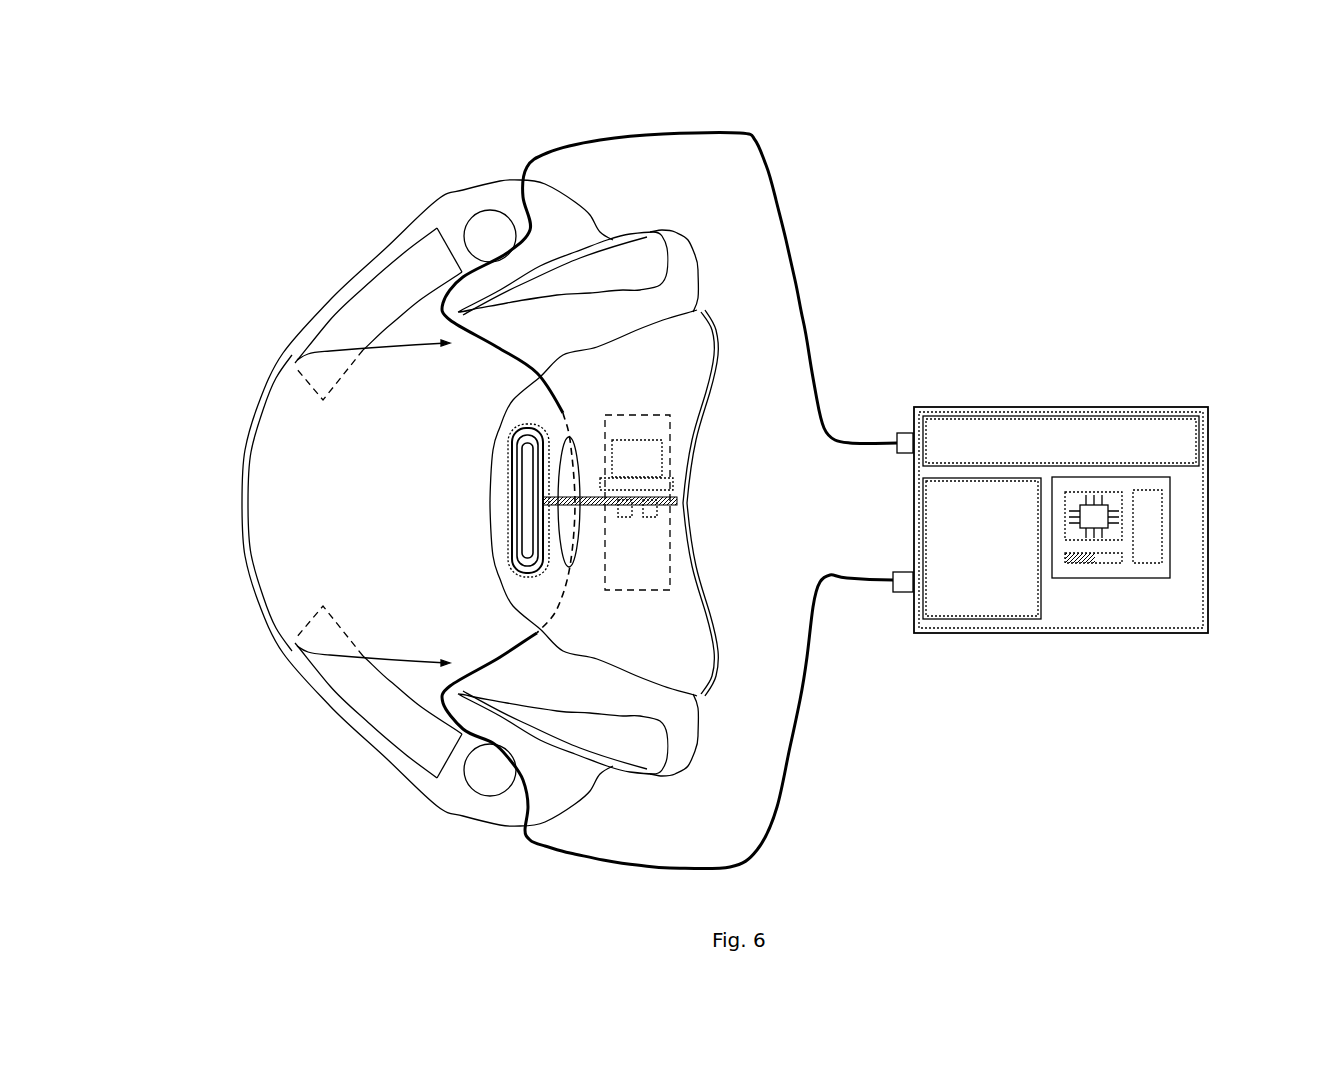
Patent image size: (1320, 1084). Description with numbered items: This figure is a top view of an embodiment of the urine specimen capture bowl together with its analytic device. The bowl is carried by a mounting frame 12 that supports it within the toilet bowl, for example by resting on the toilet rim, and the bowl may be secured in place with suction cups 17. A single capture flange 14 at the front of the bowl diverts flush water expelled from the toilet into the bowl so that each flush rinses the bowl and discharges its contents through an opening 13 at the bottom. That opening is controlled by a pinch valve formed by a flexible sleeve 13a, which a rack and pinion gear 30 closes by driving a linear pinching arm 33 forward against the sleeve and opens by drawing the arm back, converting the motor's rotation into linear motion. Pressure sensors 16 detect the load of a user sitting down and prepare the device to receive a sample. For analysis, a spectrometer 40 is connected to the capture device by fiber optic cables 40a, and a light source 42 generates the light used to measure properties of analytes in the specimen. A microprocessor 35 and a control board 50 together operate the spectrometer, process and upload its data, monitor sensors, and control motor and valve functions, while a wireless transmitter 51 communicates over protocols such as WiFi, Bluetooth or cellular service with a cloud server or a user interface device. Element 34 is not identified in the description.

The mounting frame 12 is at (448, 217).
The opening 13 is at (513, 508).
The flexible sleeve 13a is at (518, 542).
The capture flange 14 is at (302, 513).
The pressure sensors 16 is at (373, 303).
The suction cups 17 is at (495, 223).
The rack and pinion gear 30 is at (671, 433).
The linear pinching arm 33 is at (593, 505).
The sensor module 34 is at (653, 517).
The microprocessor 35 is at (1093, 513).
The spectrometer 40 is at (1095, 508).
The fiber optic cables 40a is at (798, 283).
The light source 42 is at (975, 432).
The control board 50 is at (1147, 513).
The wireless transmitter 51 is at (1110, 563).